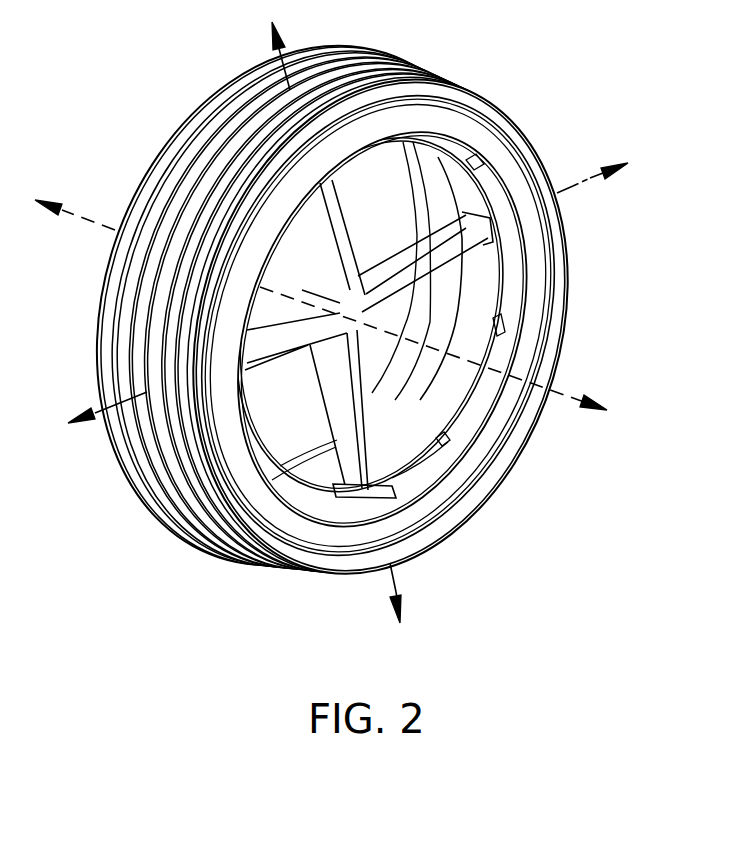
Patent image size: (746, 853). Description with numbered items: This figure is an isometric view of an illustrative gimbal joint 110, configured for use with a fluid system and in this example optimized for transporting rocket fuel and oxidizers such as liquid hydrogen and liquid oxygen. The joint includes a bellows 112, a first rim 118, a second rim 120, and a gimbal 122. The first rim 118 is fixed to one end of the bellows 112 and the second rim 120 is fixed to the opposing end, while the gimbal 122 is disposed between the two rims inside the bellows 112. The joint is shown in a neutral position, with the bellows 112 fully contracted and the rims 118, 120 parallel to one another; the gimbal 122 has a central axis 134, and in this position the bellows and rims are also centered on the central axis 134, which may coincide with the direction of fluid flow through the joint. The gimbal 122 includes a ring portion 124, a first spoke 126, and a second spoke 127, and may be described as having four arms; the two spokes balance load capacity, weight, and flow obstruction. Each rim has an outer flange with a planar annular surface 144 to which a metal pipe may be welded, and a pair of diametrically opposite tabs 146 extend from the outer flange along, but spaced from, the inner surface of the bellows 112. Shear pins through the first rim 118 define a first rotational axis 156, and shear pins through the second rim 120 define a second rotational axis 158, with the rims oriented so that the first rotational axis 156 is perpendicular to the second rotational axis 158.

The gimbal joint 110 is at (108, 94).
The bellows 112 is at (413, 62).
The first rim 118 is at (500, 440).
The second rim 120 is at (293, 477).
The gimbal 122 is at (483, 287).
The ring portion 124 is at (481, 317).
The first spoke 126 is at (332, 370).
The second spoke 127 is at (370, 275).
The central axis 134 is at (590, 393).
The planar annular surface 144 is at (272, 510).
The tab 146 is at (530, 223).
The first rotational axis 156 is at (396, 588).
The second rotational axis 158 is at (579, 181).